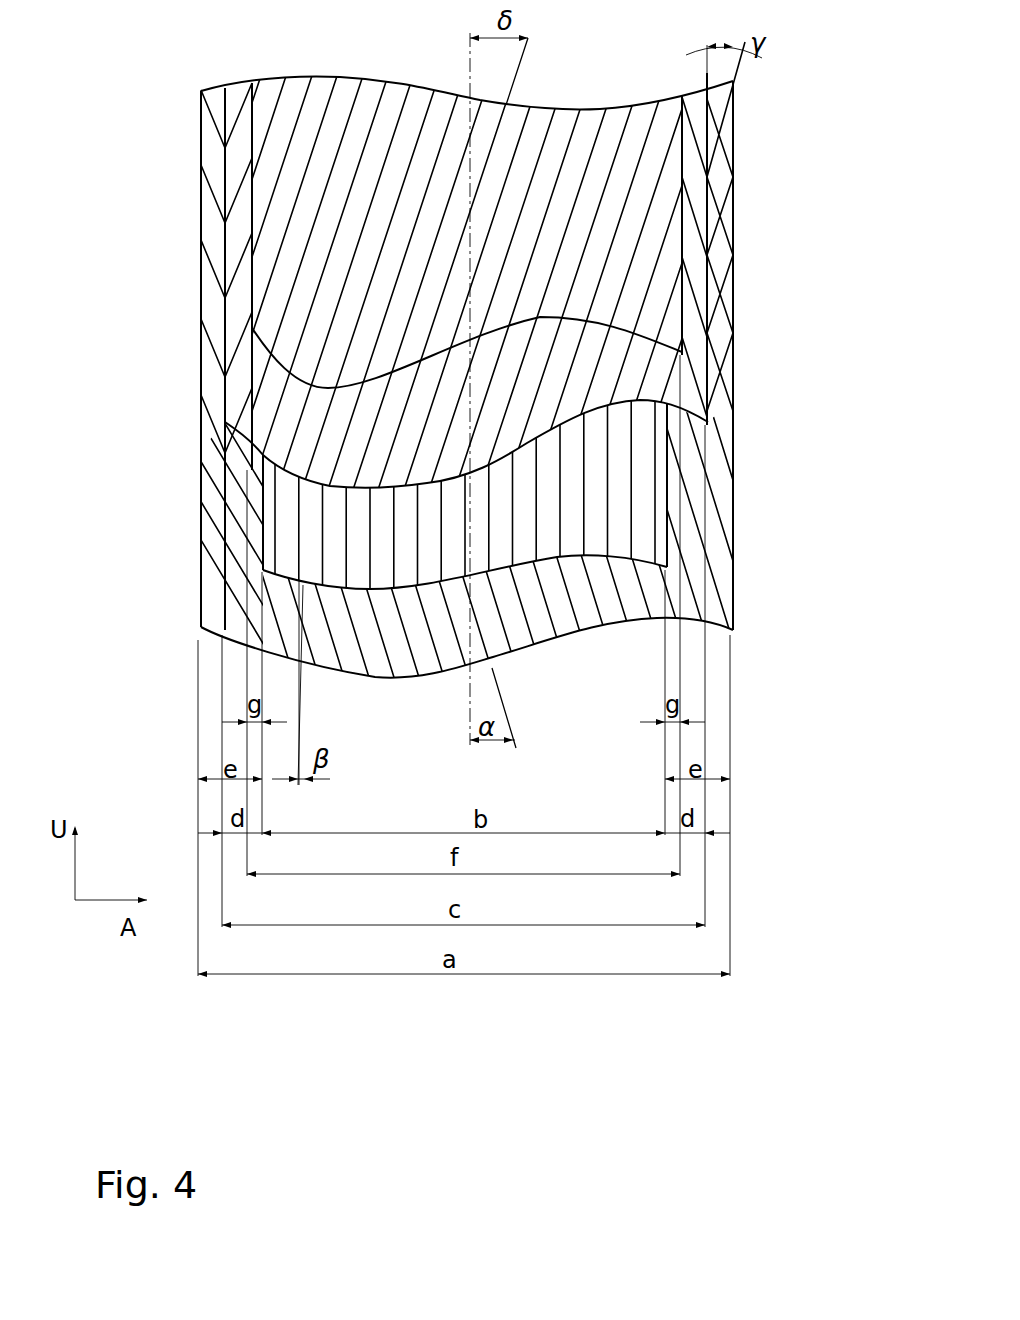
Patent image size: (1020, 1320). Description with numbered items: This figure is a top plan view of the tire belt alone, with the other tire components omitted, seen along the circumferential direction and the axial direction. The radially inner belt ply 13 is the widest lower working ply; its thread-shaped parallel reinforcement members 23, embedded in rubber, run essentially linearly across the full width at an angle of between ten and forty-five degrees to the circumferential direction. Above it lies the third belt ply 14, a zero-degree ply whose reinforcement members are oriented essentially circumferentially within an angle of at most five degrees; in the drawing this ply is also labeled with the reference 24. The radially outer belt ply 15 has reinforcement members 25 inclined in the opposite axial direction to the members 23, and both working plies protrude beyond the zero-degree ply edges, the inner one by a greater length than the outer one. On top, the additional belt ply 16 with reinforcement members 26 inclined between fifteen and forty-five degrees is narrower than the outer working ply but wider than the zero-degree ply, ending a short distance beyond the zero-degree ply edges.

The radially inner belt ply 13 is at (722, 345).
The third belt ply 14 is at (642, 523).
The radially outer belt ply 15 is at (690, 302).
The additional belt ply 16 is at (640, 198).
The reinforcement members 23 is at (232, 562).
The intermediate layer with transverse fibres 24 is at (322, 530).
The reinforcement members 25 is at (247, 294).
The reinforcement members 26 is at (312, 170).